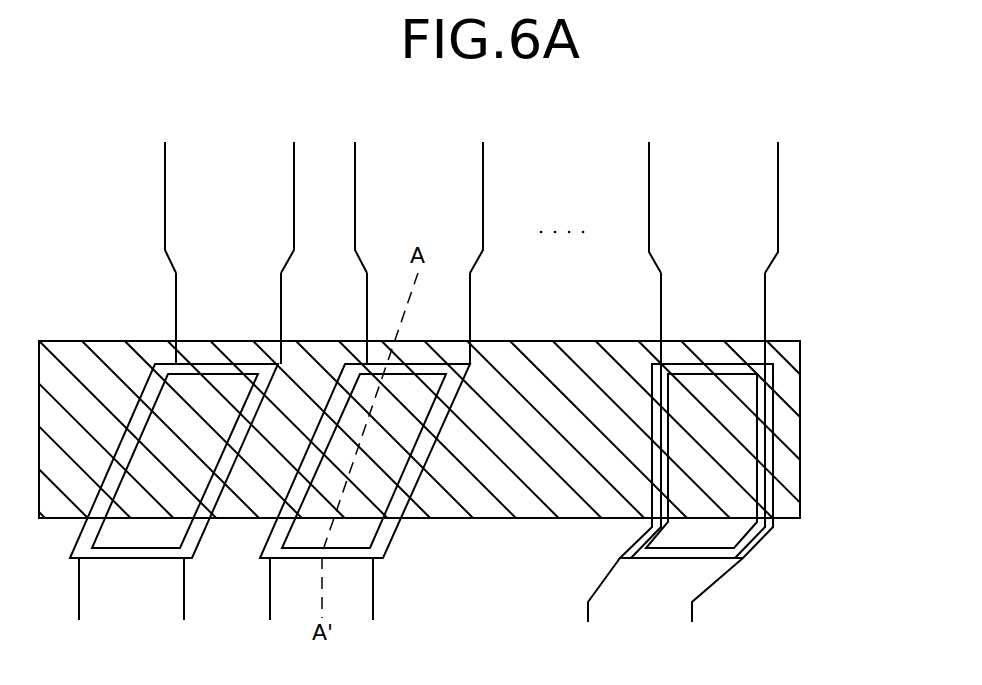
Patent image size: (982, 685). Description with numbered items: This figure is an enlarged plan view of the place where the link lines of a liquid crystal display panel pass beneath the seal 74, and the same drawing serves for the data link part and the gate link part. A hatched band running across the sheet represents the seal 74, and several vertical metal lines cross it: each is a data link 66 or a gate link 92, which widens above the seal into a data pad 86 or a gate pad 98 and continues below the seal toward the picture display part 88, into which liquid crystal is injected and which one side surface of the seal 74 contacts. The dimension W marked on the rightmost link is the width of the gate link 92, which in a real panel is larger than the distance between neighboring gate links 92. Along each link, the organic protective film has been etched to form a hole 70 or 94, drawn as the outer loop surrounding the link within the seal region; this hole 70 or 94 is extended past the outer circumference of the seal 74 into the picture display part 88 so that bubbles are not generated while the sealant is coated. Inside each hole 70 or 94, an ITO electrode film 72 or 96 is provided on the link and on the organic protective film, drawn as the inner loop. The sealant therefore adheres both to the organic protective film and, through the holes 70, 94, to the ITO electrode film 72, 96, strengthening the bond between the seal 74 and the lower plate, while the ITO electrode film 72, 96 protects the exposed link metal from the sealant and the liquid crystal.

The seal 74 is at (124, 403).
The data pad 86 is at (531, 207).
The gate pad 98 is at (773, 231).
The data link 66 is at (536, 415).
The gate link 92 is at (775, 293).
The ITO electrode film 72 is at (483, 461).
The ITO electrode film 96 is at (772, 484).
The hole 70 is at (490, 464).
The hole 94 is at (738, 537).
The picture display part 88 is at (492, 542).